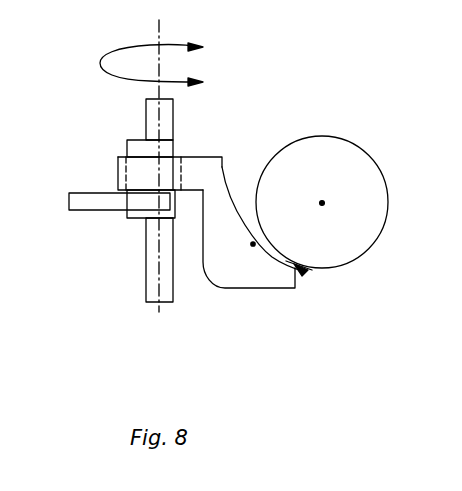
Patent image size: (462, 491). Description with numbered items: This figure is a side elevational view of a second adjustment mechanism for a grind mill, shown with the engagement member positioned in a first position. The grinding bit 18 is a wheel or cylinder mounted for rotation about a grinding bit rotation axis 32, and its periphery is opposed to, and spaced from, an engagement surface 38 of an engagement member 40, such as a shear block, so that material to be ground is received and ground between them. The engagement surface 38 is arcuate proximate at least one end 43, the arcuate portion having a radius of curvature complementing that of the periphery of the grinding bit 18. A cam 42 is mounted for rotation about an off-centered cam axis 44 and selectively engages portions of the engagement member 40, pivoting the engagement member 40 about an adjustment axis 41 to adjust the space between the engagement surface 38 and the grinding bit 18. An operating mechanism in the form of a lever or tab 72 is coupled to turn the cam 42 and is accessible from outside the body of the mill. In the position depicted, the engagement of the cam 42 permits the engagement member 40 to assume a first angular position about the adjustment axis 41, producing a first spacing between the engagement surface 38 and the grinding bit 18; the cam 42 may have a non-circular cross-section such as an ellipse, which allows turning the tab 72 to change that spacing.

The grinding bit 18 is at (355, 147).
The grinding bit rotation axis 32 is at (324, 203).
The engagement surface 38 is at (222, 175).
The engagement member 40 is at (203, 157).
The adjustment axis 41 is at (253, 246).
The cam 42 is at (139, 140).
The end 43 is at (305, 271).
The cam axis 44 is at (162, 92).
The tab 72 is at (90, 193).